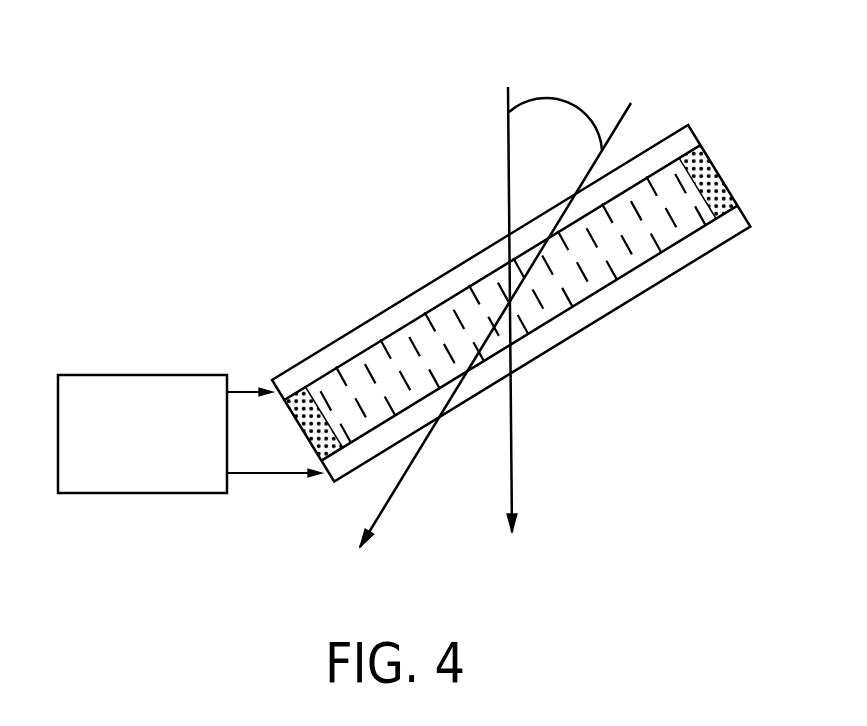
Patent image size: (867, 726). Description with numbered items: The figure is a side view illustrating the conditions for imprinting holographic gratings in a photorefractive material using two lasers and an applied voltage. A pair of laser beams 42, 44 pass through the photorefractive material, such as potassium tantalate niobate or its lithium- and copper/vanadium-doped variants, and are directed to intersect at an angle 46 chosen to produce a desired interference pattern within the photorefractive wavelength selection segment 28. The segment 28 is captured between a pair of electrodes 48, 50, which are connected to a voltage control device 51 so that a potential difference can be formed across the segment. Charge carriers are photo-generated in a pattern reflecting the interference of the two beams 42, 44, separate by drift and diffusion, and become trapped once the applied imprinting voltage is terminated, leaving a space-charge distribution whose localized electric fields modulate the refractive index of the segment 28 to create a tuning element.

The photorefractive wavelength selection segment 28 is at (628, 268).
The laser beam 42 is at (507, 153).
The laser beam 44 is at (622, 124).
The angle 46 is at (530, 98).
The electrode 48 is at (304, 368).
The electrode 50 is at (328, 474).
The voltage control device 51 is at (92, 488).